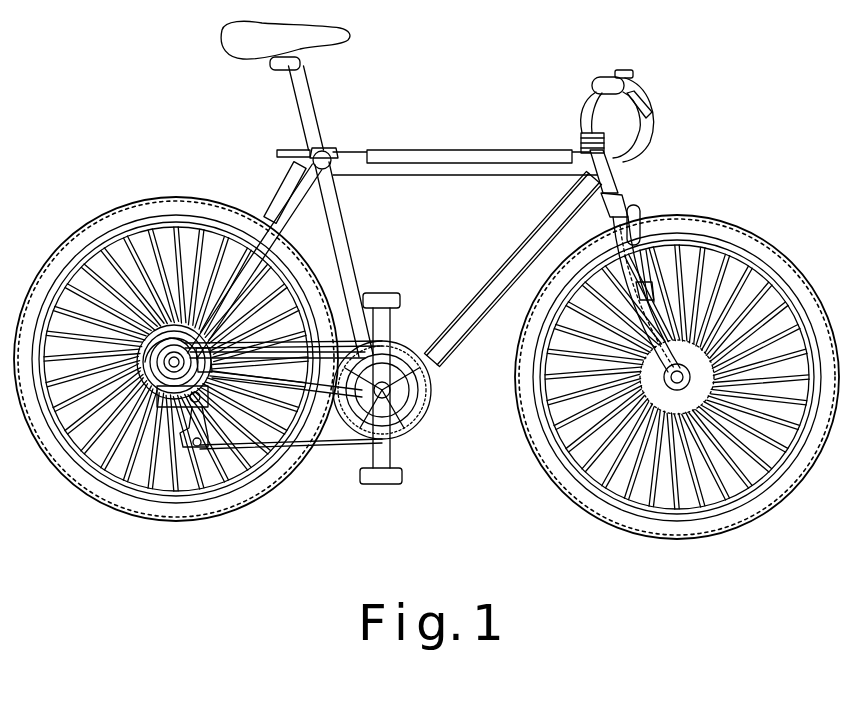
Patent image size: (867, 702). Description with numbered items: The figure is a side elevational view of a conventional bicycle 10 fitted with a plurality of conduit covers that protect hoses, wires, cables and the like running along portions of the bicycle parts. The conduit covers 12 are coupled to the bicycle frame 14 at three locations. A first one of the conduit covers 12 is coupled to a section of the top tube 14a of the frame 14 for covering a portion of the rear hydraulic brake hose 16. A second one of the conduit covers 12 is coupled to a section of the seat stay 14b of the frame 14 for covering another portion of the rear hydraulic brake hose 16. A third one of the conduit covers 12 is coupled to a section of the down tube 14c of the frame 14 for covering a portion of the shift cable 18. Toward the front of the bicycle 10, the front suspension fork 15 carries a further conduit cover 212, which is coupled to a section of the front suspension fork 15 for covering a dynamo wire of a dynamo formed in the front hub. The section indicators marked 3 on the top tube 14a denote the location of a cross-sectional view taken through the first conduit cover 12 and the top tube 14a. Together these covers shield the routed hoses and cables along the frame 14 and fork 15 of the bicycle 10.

The bicycle 10 is at (678, 65).
The conduit cover 12 is at (487, 147).
The bicycle frame 14 is at (477, 244).
The top tube 14a is at (387, 178).
The seat stay 14b is at (343, 228).
The down tube 14c is at (490, 287).
The front suspension fork 15 is at (645, 300).
The rear hydraulic brake hose 16 is at (338, 144).
The shift cable 18 is at (618, 163).
The conduit cover 212 is at (648, 302).
The section line 3- 3 is at (466, 141).